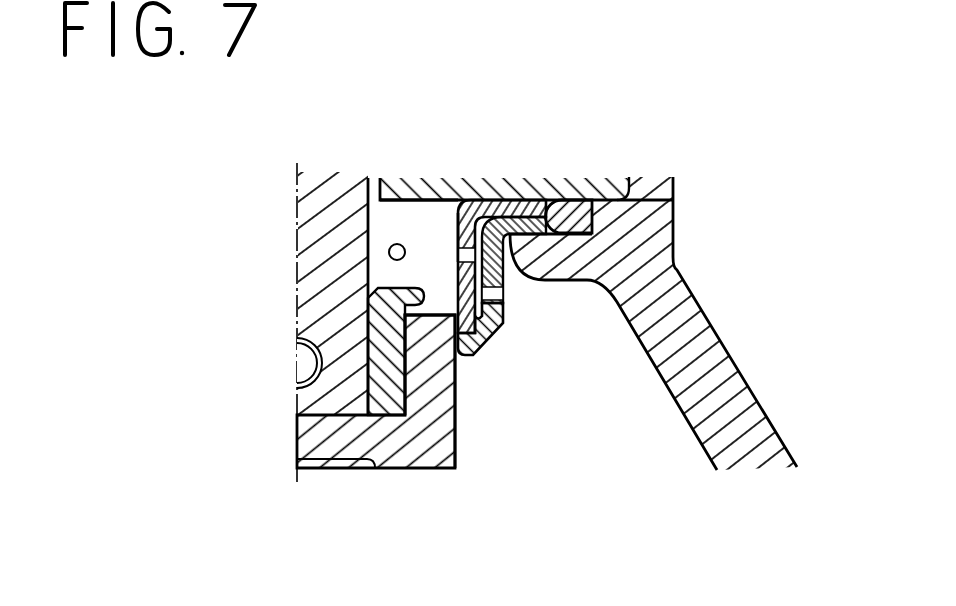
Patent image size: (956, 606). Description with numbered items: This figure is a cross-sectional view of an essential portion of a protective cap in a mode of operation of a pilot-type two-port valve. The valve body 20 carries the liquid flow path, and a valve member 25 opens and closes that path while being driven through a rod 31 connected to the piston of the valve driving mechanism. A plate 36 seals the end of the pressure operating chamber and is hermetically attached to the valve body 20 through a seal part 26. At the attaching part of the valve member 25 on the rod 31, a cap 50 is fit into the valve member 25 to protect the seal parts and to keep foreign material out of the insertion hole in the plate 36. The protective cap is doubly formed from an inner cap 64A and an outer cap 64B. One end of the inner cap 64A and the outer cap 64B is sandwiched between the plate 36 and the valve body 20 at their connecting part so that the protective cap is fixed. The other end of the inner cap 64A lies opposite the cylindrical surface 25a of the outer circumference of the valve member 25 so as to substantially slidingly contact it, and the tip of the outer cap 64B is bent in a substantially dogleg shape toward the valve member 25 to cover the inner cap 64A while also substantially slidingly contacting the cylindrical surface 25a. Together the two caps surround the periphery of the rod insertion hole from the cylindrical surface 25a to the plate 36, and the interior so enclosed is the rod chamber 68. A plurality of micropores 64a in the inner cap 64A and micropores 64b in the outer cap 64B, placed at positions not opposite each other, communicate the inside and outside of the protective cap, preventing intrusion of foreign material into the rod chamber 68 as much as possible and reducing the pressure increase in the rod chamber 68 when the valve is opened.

The valve body 20 is at (737, 400).
The valve member 25 is at (408, 441).
The cylindrical surface 25a is at (458, 398).
The seal part 26 is at (597, 220).
The rod 31 is at (335, 235).
The plate 36 is at (600, 190).
The cap 50 is at (390, 323).
The inner cap 64A is at (478, 205).
The micropores 64a is at (398, 244).
The micropores 64b is at (507, 292).
The outer cap 64B is at (490, 328).
The rod chamber 68 is at (421, 226).